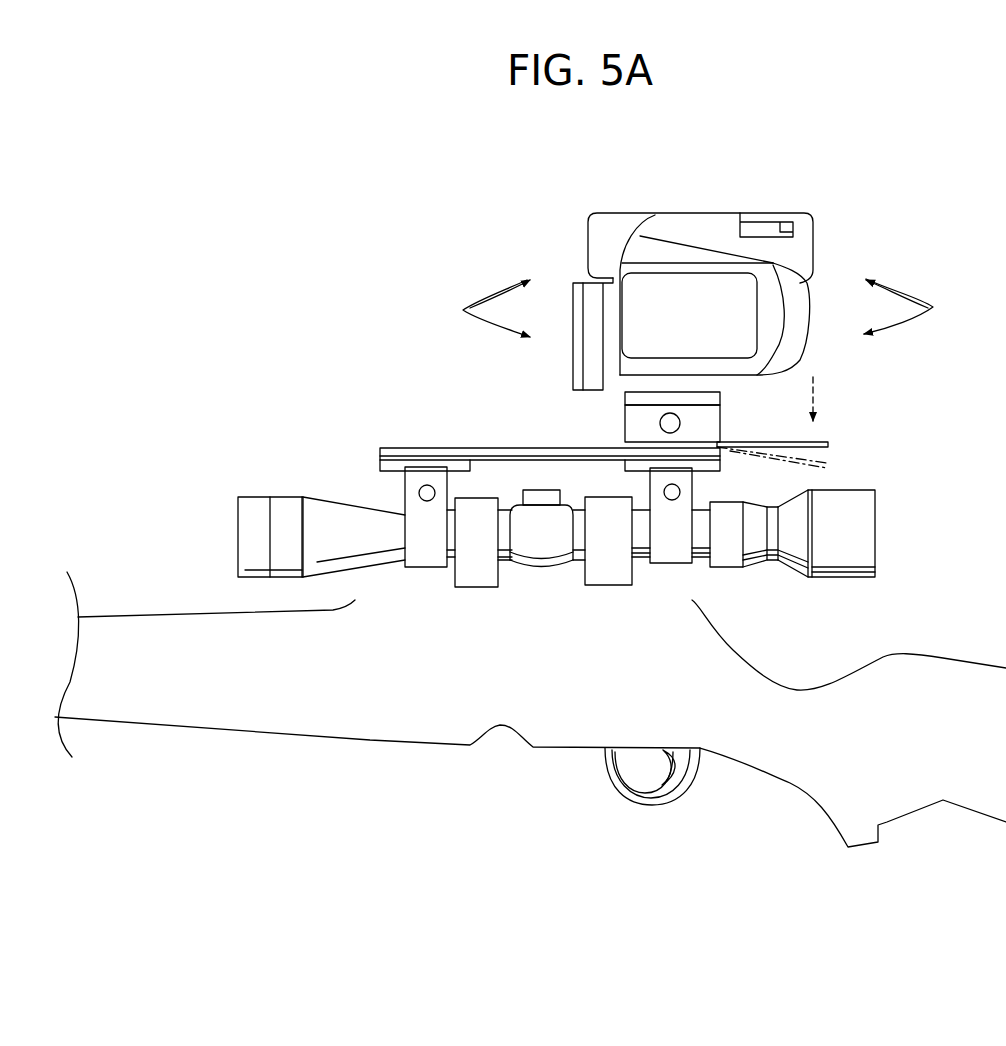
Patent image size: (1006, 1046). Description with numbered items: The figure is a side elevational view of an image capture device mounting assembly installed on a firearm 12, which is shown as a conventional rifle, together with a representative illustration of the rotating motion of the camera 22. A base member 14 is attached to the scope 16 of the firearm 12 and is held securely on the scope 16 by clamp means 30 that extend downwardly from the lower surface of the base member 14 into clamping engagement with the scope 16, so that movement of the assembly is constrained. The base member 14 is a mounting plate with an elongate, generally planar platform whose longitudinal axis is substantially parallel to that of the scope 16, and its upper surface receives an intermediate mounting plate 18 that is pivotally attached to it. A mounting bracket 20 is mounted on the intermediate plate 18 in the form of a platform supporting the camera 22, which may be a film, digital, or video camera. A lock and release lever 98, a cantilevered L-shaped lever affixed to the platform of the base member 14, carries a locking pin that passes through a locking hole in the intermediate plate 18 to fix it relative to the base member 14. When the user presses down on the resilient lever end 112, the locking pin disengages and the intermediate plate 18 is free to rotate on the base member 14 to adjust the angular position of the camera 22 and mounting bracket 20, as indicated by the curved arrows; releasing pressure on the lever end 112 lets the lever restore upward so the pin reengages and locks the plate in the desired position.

The firearm 12 is at (193, 705).
The base member 14 is at (408, 446).
The scope 16 is at (857, 533).
The intermediate mounting plate 18 is at (622, 423).
The mounting bracket 20 is at (622, 398).
The camera 22 is at (705, 222).
The clamp means 30 is at (422, 546).
The lock and release lever 98 is at (818, 442).
The lever end 112 is at (835, 441).